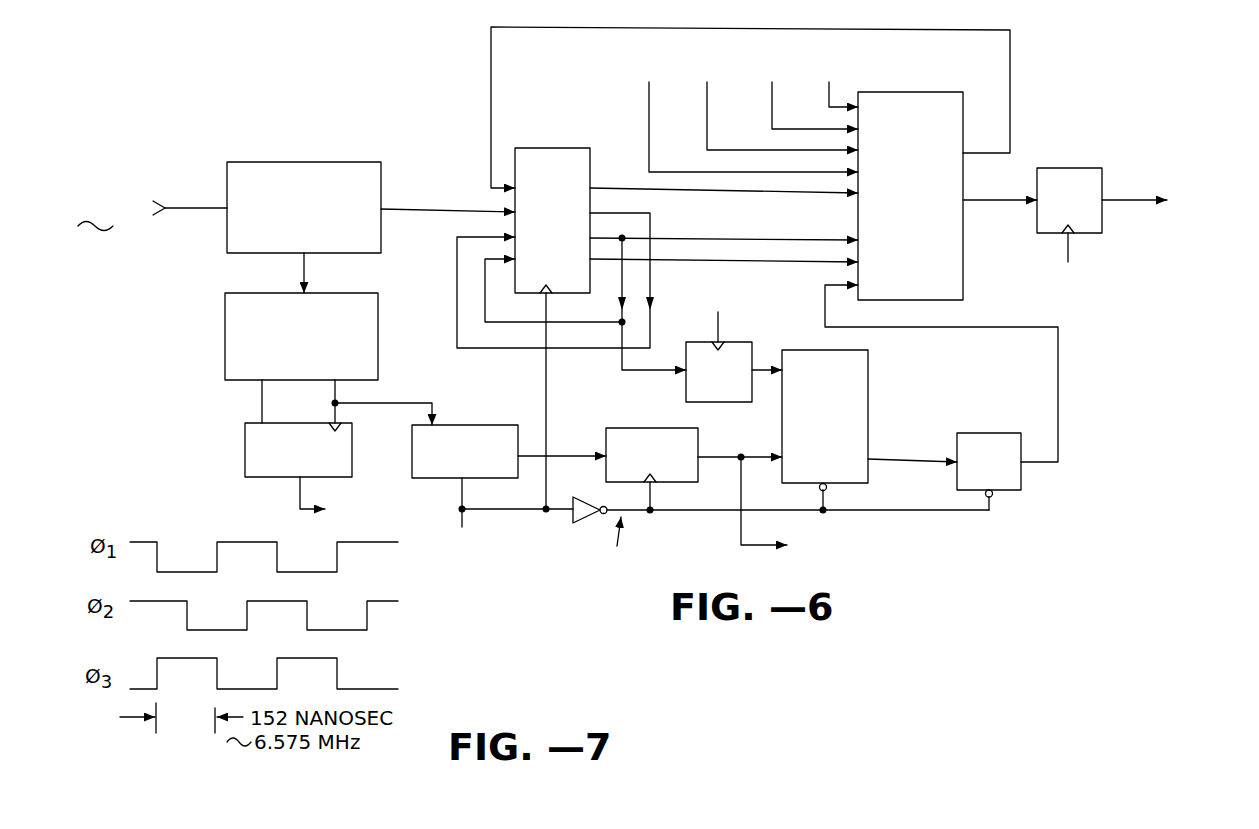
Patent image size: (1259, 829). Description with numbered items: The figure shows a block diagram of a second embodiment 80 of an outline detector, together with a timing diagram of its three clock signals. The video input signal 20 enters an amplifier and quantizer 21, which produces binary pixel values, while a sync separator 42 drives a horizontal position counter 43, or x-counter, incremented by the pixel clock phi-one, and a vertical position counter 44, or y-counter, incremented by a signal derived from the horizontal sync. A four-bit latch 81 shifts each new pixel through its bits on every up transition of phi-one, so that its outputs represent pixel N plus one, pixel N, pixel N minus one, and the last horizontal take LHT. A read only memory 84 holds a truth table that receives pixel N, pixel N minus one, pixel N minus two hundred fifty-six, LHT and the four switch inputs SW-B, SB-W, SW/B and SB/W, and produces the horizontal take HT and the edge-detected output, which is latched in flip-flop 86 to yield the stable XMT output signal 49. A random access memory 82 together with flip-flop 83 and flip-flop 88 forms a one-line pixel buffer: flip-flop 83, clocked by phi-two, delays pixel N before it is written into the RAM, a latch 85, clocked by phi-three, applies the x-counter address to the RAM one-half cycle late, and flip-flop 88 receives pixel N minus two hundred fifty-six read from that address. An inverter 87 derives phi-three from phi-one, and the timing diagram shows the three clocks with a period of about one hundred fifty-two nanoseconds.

The video input signal 20 is at (93, 168).
The amplifier and quantizer 21 is at (323, 162).
The sync separator 42 is at (225, 335).
The horizontal position counter 43 is at (480, 425).
The vertical position counter 44 is at (245, 448).
The output signal 49 is at (1196, 183).
The second embodiment of the apparatus 80 is at (1128, 113).
The four-bit latch 81 is at (566, 148).
The random access memory 82 is at (868, 373).
The flip-flop 83 is at (740, 342).
The read only memory 84 is at (963, 266).
The latch 85 is at (646, 428).
The flip-flop 86 is at (1100, 222).
The inverter 87 is at (577, 525).
The flip-flop 88 is at (1021, 478).